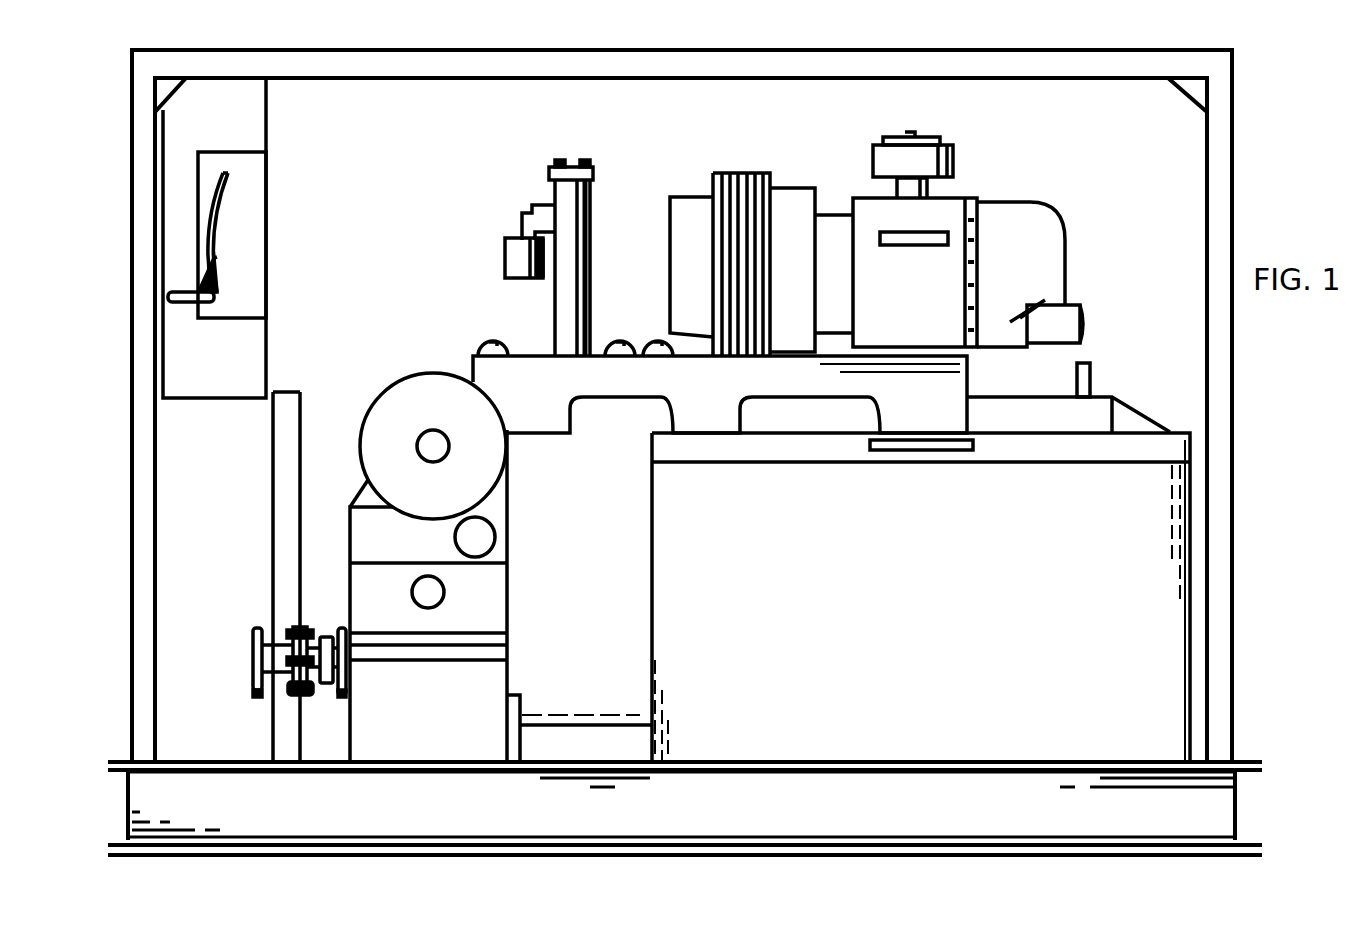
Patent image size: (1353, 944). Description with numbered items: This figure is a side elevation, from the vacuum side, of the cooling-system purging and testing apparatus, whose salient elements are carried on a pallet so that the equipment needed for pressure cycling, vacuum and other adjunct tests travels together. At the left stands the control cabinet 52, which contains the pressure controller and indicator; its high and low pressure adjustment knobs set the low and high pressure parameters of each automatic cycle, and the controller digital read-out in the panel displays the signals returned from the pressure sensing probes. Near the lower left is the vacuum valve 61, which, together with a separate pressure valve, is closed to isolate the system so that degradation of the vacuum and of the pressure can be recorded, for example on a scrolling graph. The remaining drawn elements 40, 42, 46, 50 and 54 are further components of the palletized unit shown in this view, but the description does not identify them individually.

The enclosure frame 40 is at (1238, 155).
The tank 42 is at (1122, 420).
The filter column 46 is at (570, 215).
The pump and motor 50 is at (925, 291).
The control cabinet 52 is at (250, 233).
The hose reel pump unit 54 is at (393, 410).
The vacuum valve 61 is at (326, 640).